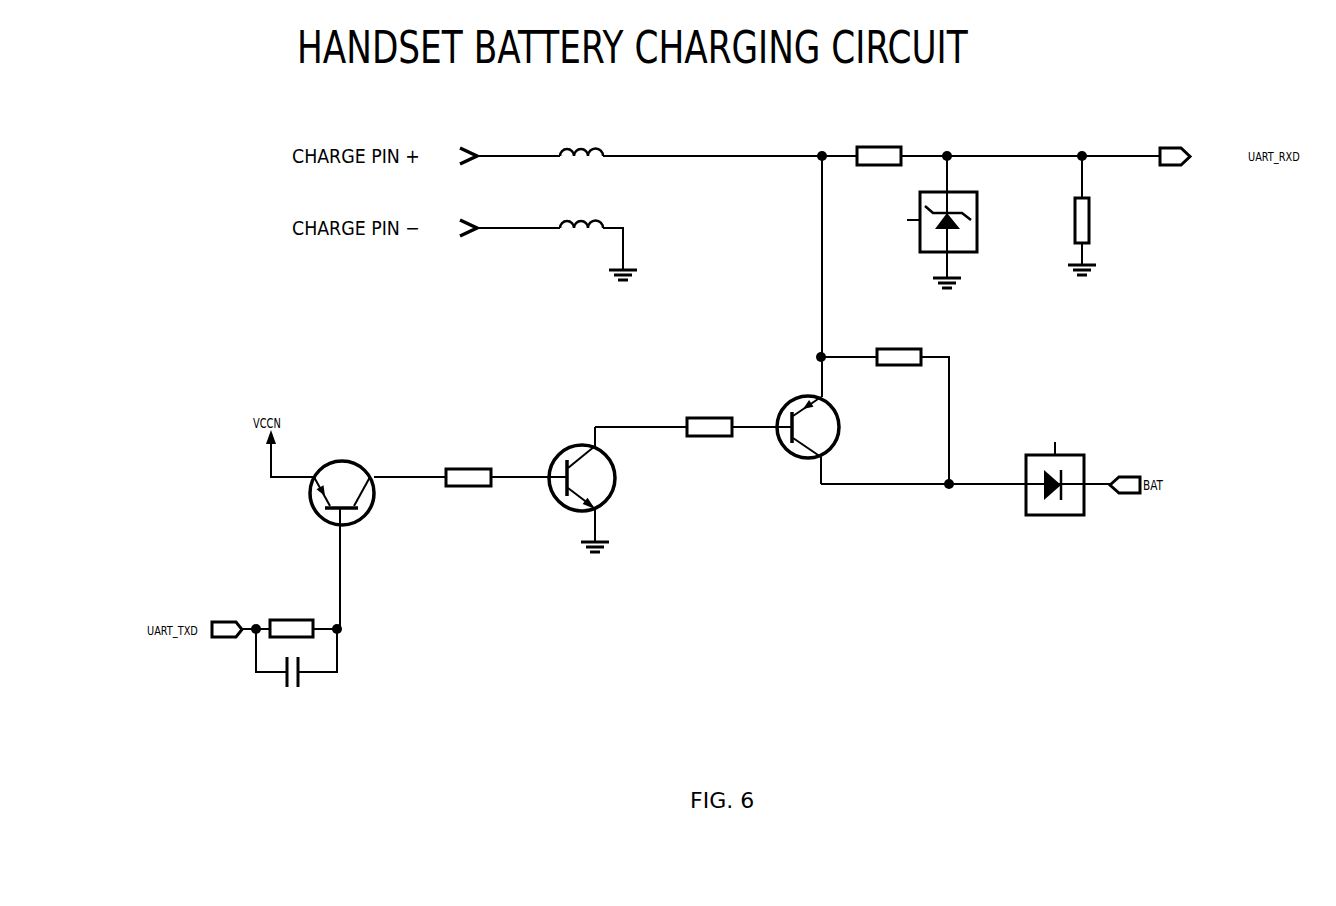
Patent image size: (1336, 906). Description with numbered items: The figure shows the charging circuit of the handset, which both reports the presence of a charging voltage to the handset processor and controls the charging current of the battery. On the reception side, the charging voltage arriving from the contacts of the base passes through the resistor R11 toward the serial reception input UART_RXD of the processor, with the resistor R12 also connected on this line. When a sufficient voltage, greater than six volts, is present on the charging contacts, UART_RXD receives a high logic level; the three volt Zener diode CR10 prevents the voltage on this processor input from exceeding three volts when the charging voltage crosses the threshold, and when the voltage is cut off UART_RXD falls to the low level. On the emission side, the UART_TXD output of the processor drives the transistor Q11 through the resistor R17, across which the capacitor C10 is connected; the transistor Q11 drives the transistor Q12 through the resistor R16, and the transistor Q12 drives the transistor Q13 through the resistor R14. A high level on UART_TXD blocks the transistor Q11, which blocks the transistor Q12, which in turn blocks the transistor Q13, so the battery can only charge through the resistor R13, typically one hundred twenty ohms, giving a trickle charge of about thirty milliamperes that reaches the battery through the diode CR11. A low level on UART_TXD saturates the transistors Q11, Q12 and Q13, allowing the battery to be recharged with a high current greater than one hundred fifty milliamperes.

The resistor 1k R11 is at (879, 158).
The resistor 560 R12 is at (1101, 217).
The resistor R13 is at (899, 358).
The resistor 560 R14 is at (709, 427).
The resistor 1k R16 is at (473, 497).
The resistor 1k R17 is at (291, 605).
The capacitor 10nF C10 is at (289, 698).
The Zener diode CR10 is at (965, 222).
The diode CR11 is at (1055, 464).
The transistor Q11 is at (342, 477).
The transistor Q12 is at (595, 478).
The transistor Q13 is at (825, 427).